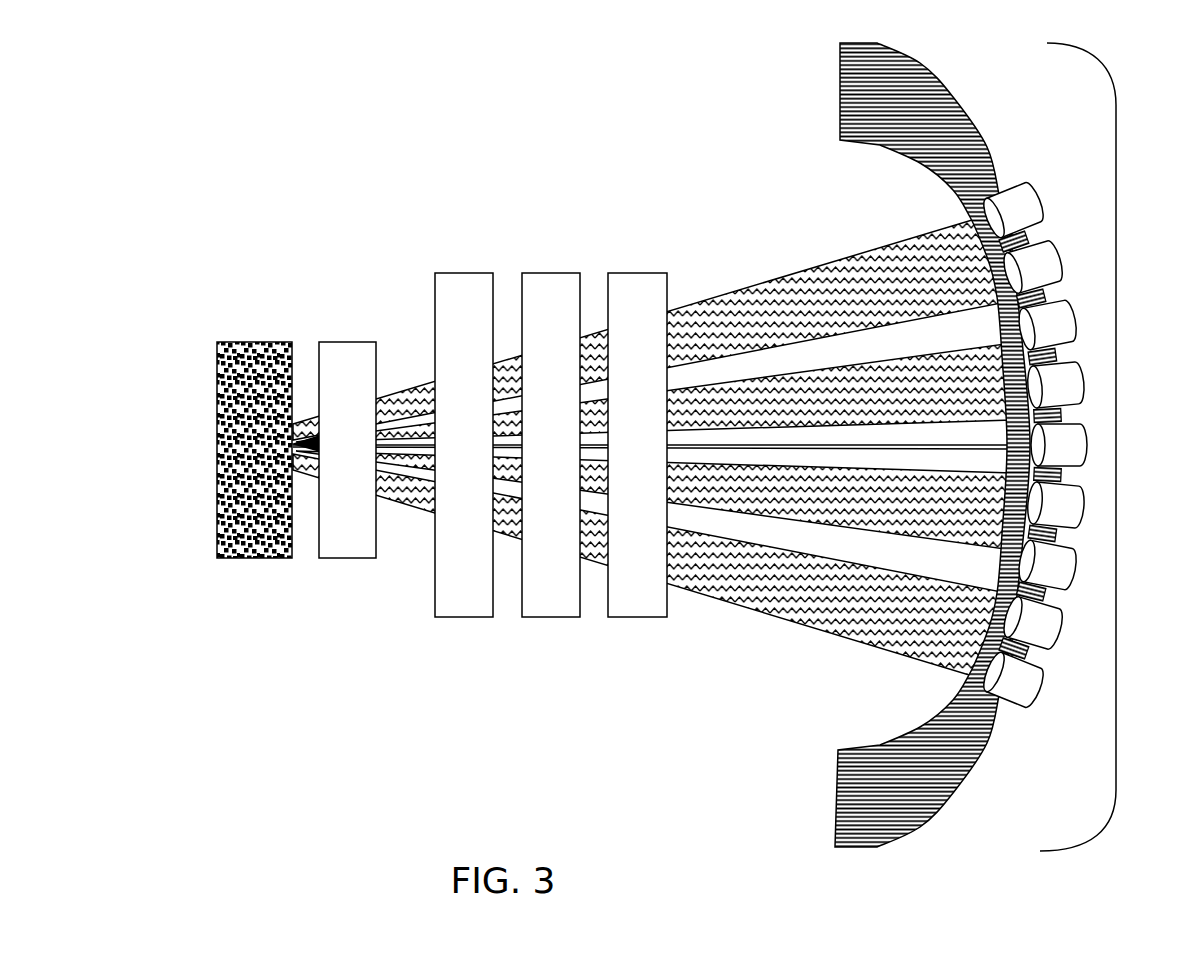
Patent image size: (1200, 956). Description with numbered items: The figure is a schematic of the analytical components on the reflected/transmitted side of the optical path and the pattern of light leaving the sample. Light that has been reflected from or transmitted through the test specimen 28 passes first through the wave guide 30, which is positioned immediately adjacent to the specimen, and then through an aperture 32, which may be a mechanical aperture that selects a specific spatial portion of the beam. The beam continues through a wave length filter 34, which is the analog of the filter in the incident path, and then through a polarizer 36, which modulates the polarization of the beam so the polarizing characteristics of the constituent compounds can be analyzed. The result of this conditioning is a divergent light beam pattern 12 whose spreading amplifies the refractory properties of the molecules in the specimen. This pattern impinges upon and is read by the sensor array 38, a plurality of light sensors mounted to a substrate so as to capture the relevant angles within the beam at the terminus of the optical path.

The light beam pattern 12 is at (757, 612).
The test specimen 28 is at (253, 342).
The wave guide 30 is at (342, 343).
The aperture 32 is at (468, 273).
The wave length filter 34 is at (548, 273).
The polarizer 36 is at (642, 273).
The sensor array 38 is at (1116, 450).